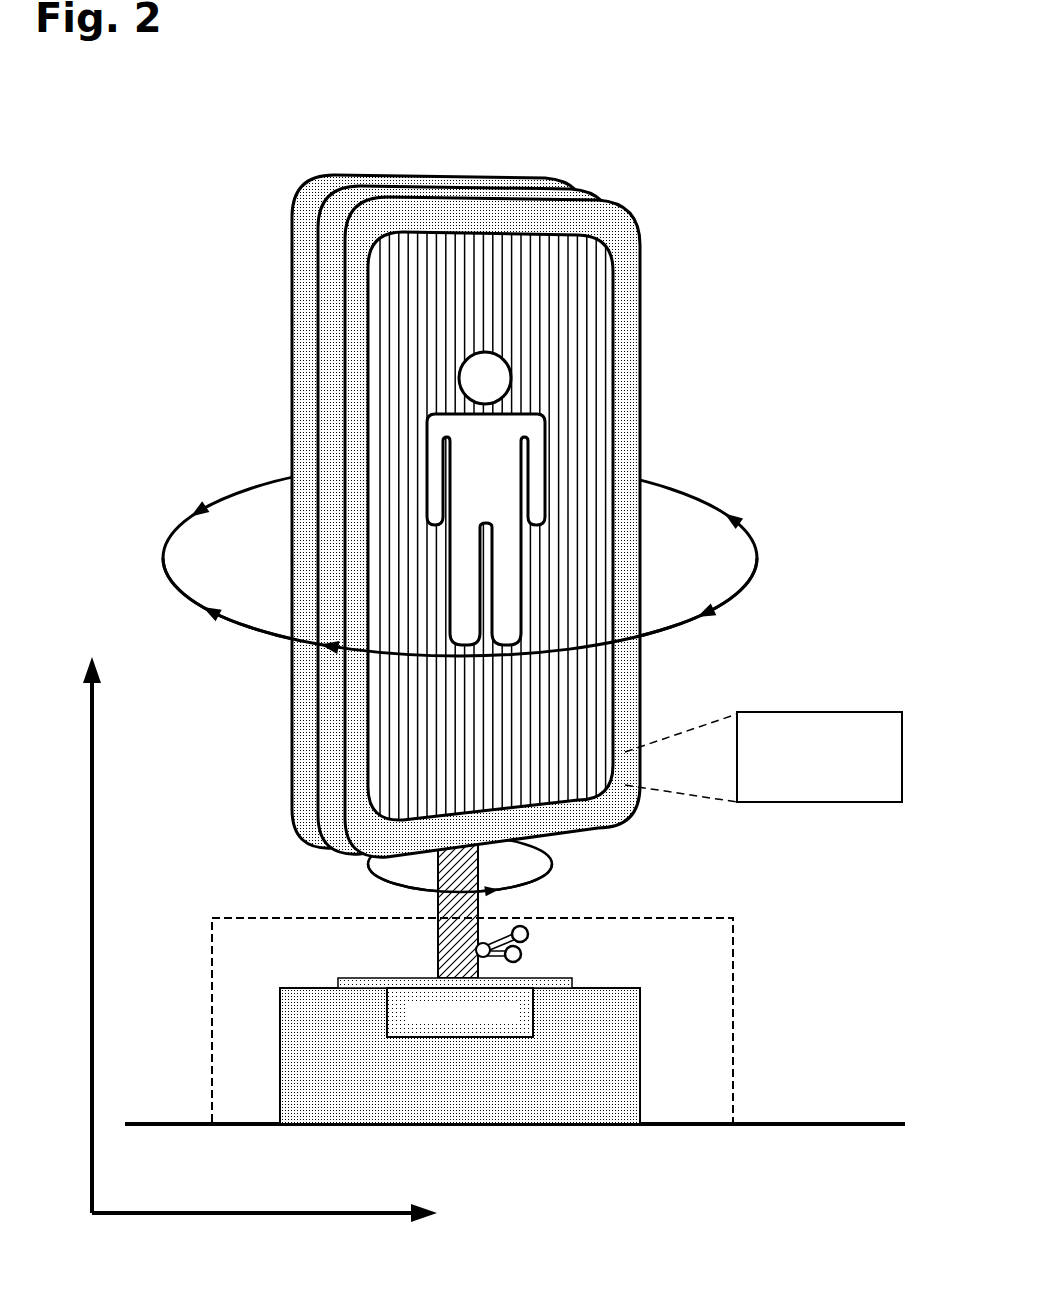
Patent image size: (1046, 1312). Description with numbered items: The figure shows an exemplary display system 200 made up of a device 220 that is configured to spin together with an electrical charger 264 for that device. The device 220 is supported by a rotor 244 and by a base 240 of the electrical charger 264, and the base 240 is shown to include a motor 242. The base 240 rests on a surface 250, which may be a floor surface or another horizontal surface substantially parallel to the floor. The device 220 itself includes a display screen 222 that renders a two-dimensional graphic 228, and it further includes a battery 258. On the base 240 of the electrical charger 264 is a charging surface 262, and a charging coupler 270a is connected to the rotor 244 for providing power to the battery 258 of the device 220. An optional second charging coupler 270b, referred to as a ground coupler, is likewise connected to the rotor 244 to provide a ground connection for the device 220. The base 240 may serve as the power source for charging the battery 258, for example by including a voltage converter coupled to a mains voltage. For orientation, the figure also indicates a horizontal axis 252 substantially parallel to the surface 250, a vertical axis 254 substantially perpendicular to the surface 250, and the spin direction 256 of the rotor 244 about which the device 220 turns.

The display system 200 is at (786, 157).
The device 220 is at (641, 252).
The display screen 222 is at (490, 527).
The two-dimensional (2D) graphic 228 is at (522, 358).
The base 240 is at (641, 1060).
The motor 242 is at (460, 1012).
The rotor 244 is at (437, 910).
The surface 250 is at (823, 1122).
The horizontal axis 252 is at (254, 1211).
The vertical axis 254 is at (90, 853).
The spin direction 256 is at (744, 588).
The battery 258 is at (820, 711).
The charging surface 262 is at (337, 984).
The electrical charger 264 is at (701, 916).
The charging coupler 270a is at (548, 936).
The second charging coupler (ground coupler) 270b is at (540, 955).